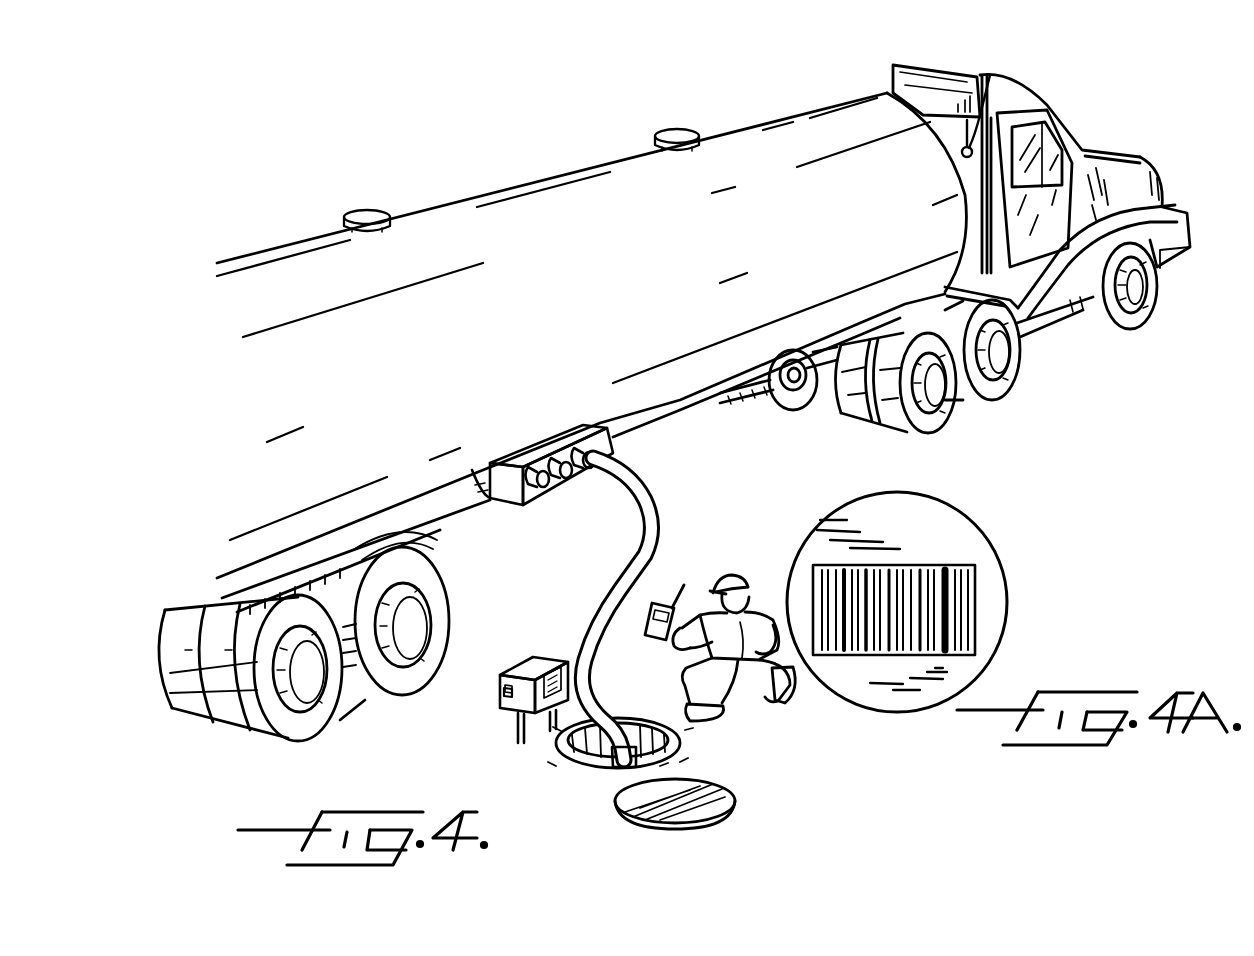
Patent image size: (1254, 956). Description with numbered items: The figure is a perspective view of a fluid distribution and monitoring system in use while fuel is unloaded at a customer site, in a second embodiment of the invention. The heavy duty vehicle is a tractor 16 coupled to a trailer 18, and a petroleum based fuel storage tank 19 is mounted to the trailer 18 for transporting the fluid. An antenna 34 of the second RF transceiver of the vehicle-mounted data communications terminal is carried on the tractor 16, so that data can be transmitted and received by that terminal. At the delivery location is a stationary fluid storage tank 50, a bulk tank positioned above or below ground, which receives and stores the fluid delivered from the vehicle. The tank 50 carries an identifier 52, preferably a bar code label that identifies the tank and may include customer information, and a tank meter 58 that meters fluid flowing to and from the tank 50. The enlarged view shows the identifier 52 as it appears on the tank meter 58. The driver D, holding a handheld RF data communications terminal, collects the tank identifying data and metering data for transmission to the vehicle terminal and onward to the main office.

In FIG. 4, the tractor 16 is at (1137, 157).
In FIG. 4, the trailer 18 is at (236, 706).
In FIG. 4, the fluid storage tank 19 is at (614, 307).
In FIG. 4, the antenna 34 is at (990, 75).
In FIG. 4, the fluid storage tank 50 is at (601, 772).
In FIG. 4, the identifier 52 is at (508, 693).
In FIG. 4A, the identifier 52 is at (977, 603).
In FIG. 4, the tank meter 58 is at (530, 657).
In FIG. 4A, the tank meter 58 is at (960, 537).
In FIG. 4, the driver D is at (742, 574).